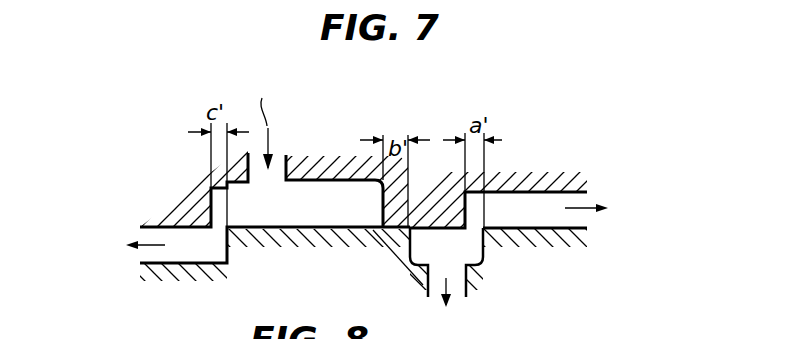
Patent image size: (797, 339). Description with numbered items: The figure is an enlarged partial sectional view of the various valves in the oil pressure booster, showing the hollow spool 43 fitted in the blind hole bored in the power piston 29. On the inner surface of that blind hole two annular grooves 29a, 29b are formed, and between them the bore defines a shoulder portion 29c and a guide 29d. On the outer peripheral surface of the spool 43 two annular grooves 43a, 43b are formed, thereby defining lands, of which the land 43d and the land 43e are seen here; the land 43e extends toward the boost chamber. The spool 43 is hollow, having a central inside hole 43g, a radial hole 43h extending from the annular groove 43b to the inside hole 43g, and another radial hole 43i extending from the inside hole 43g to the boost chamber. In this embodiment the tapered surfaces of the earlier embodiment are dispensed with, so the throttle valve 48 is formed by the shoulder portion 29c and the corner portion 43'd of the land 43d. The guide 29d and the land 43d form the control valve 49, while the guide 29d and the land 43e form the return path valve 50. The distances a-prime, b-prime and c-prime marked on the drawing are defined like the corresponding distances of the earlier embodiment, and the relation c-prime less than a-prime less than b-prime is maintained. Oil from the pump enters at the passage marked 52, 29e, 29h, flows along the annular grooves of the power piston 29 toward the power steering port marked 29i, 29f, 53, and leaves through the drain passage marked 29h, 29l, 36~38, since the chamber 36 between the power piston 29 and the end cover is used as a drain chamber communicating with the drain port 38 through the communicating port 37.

The throttle valve 48 is at (207, 222).
The shoulder portion 29c is at (200, 222).
The annular groove 43a is at (200, 263).
The passage 29i is at (123, 296).
The passage 29f is at (123, 296).
The port to power steering 53 is at (165, 263).
The pump inlet port 52 is at (330, 124).
The passage 29e is at (330, 124).
The passage 29h is at (284, 156).
The corner portion 43'd is at (307, 191).
The land 43d is at (353, 227).
The annular groove 29a is at (318, 254).
The control valve 49 is at (398, 237).
The guide 29d is at (478, 254).
The annular groove 29b is at (533, 192).
The power piston 29 is at (566, 172).
The drain passage 29l is at (668, 180).
The chamber 36 is at (668, 180).
The communicating port 37 is at (668, 180).
The drain port 38 is at (573, 202).
The land 43e is at (568, 230).
The spool 43 is at (570, 256).
The return path valve 50 is at (479, 234).
The annular groove 43b is at (478, 266).
The radial hole 43h is at (571, 301).
The inside hole 43g is at (571, 301).
The radial hole 43i is at (467, 287).